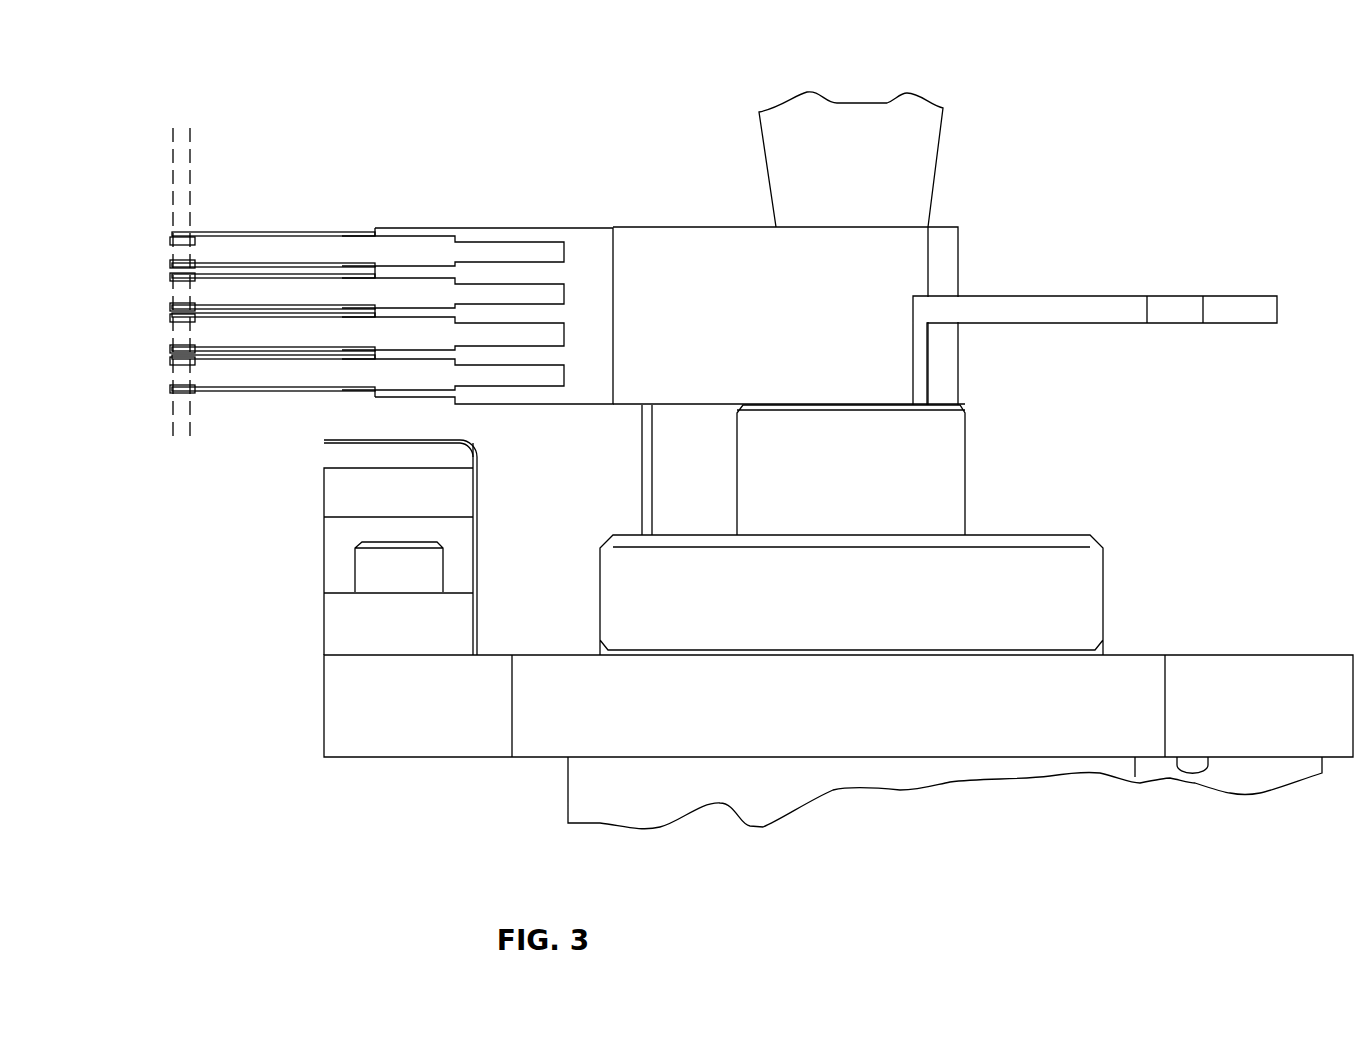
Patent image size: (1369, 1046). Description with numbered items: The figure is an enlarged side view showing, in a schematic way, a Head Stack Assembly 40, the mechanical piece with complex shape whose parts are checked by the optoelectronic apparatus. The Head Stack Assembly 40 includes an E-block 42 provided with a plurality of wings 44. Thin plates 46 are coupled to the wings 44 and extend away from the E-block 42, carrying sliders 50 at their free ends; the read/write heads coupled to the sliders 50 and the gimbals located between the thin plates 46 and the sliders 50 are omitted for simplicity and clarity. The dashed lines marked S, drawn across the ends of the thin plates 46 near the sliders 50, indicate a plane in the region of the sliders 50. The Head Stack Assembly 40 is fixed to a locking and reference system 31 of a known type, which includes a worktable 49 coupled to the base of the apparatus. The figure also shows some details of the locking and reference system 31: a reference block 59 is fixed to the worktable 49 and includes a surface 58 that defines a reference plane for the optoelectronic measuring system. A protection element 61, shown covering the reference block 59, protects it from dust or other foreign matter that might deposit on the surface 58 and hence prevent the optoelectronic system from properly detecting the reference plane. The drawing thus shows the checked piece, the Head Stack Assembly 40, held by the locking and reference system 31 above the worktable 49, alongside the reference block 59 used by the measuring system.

The locking and reference system 31 is at (965, 158).
The Head Stack Assembly 40 is at (635, 185).
The E-block 42 is at (662, 243).
The wings 44 is at (397, 227).
The thin plates 46 is at (250, 233).
The worktable 49 is at (367, 700).
The sliders 50 is at (172, 242).
The surface 58 is at (336, 460).
The reference block 59 is at (350, 503).
The protection element 61 is at (365, 404).
The substrate plane S is at (173, 145).